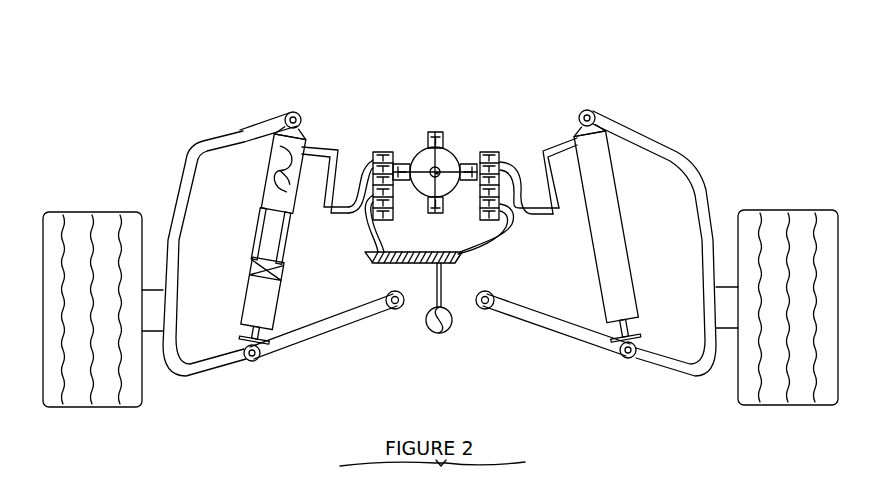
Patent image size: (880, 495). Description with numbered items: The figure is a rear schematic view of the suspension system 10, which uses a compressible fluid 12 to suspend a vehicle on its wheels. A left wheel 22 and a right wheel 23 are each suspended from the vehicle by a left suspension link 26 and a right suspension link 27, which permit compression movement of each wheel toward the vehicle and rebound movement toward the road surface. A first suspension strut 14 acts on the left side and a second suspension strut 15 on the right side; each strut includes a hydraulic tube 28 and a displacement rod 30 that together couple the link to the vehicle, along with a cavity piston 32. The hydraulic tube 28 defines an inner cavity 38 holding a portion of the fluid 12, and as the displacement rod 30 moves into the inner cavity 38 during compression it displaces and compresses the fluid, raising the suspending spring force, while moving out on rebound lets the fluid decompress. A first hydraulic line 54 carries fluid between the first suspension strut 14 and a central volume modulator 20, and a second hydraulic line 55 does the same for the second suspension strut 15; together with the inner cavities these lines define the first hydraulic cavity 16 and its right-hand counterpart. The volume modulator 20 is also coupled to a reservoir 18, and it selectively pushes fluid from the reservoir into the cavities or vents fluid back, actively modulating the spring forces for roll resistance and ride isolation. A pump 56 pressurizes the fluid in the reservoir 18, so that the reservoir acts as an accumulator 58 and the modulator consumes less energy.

The suspension system 10 is at (440, 253).
The fluid 12 is at (291, 226).
The first suspension strut 14 is at (261, 190).
The second suspension strut 15 is at (588, 234).
The first hydraulic cavity 16 is at (333, 146).
The reservoir 18 is at (383, 307).
The volume modulator 20 is at (422, 138).
The left wheel 22 is at (126, 407).
The right wheel 23 is at (741, 390).
The left suspension link 26 is at (188, 190).
The right suspension link 27 is at (655, 133).
The hydraulic tube 28 is at (278, 134).
The displacement rod 30 is at (258, 254).
The cavity piston 32 is at (262, 225).
The inner cavity 38 is at (304, 134).
The first hydraulic line 54 is at (396, 266).
The second hydraulic line 55 is at (511, 178).
The pump 56 is at (446, 336).
The accumulator 58 is at (463, 257).